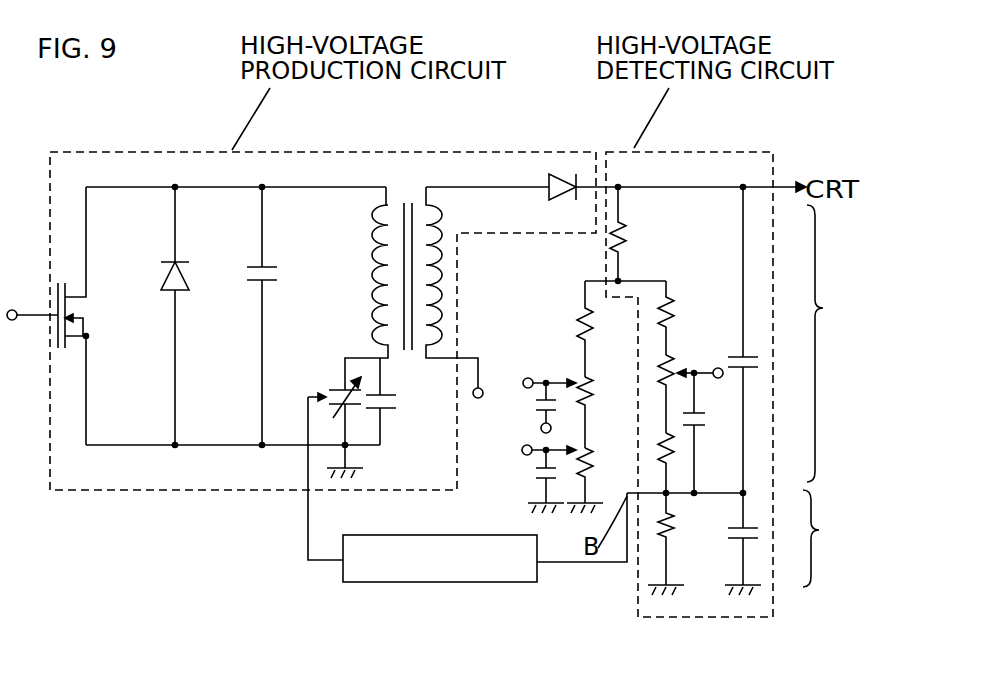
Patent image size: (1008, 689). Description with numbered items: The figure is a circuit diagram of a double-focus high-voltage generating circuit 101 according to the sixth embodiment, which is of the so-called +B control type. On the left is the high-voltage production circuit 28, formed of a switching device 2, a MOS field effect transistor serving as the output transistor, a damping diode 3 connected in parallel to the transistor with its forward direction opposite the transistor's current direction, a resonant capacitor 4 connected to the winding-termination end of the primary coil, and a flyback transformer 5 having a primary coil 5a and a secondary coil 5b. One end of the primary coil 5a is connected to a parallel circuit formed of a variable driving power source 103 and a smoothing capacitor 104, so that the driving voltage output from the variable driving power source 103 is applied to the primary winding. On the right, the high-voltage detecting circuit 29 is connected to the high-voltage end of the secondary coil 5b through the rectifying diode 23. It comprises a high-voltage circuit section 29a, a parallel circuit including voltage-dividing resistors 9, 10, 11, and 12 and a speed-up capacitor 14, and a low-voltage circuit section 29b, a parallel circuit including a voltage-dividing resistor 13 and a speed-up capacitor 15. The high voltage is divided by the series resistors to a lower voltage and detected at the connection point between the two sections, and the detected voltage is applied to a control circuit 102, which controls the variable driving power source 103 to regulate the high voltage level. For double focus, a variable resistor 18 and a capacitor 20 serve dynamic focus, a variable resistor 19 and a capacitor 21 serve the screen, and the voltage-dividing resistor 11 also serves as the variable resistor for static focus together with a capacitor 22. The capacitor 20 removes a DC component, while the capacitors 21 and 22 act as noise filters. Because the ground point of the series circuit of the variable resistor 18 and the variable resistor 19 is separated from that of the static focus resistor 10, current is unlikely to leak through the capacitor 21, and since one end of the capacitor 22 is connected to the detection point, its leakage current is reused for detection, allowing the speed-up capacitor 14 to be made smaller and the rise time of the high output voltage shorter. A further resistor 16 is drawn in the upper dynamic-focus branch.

The double-focus high-voltage generating circuit 101 is at (205, 122).
The high-voltage production circuit 28 is at (278, 148).
The high-voltage detecting circuit 29 is at (677, 145).
The switching device 2 is at (78, 340).
The damping diode 3 is at (166, 296).
The resonant capacitor 4 is at (267, 265).
The flyback transformer 5 is at (425, 250).
The primary coil 5a is at (372, 268).
The secondary coil 5b is at (447, 270).
The variable driving power source 103 is at (330, 383).
The smoothing capacitor 104 is at (388, 412).
The control circuit 102 is at (445, 582).
The rectifying diode 23 is at (563, 172).
The voltage-dividing resistor 9 is at (630, 237).
The resistor 16 is at (575, 312).
The variable resistor for dynamic focus 18 is at (591, 380).
The variable resistor for screen 19 is at (590, 456).
The voltage-dividing resistor 10 is at (680, 300).
The voltage-dividing resistor 11 is at (663, 378).
The voltage-dividing resistor 12 is at (662, 448).
The capacitor for dynamic focus 20 is at (538, 411).
The capacitor for screen 21 is at (540, 488).
The capacitor for static focus 22 is at (698, 428).
The speed-up capacitor 14 is at (750, 356).
The voltage-dividing resistor 13 is at (672, 536).
The speed-up capacitor 15 is at (752, 538).
The high-voltage circuit section 29a is at (841, 343).
The low-voltage circuit section 29b is at (837, 538).